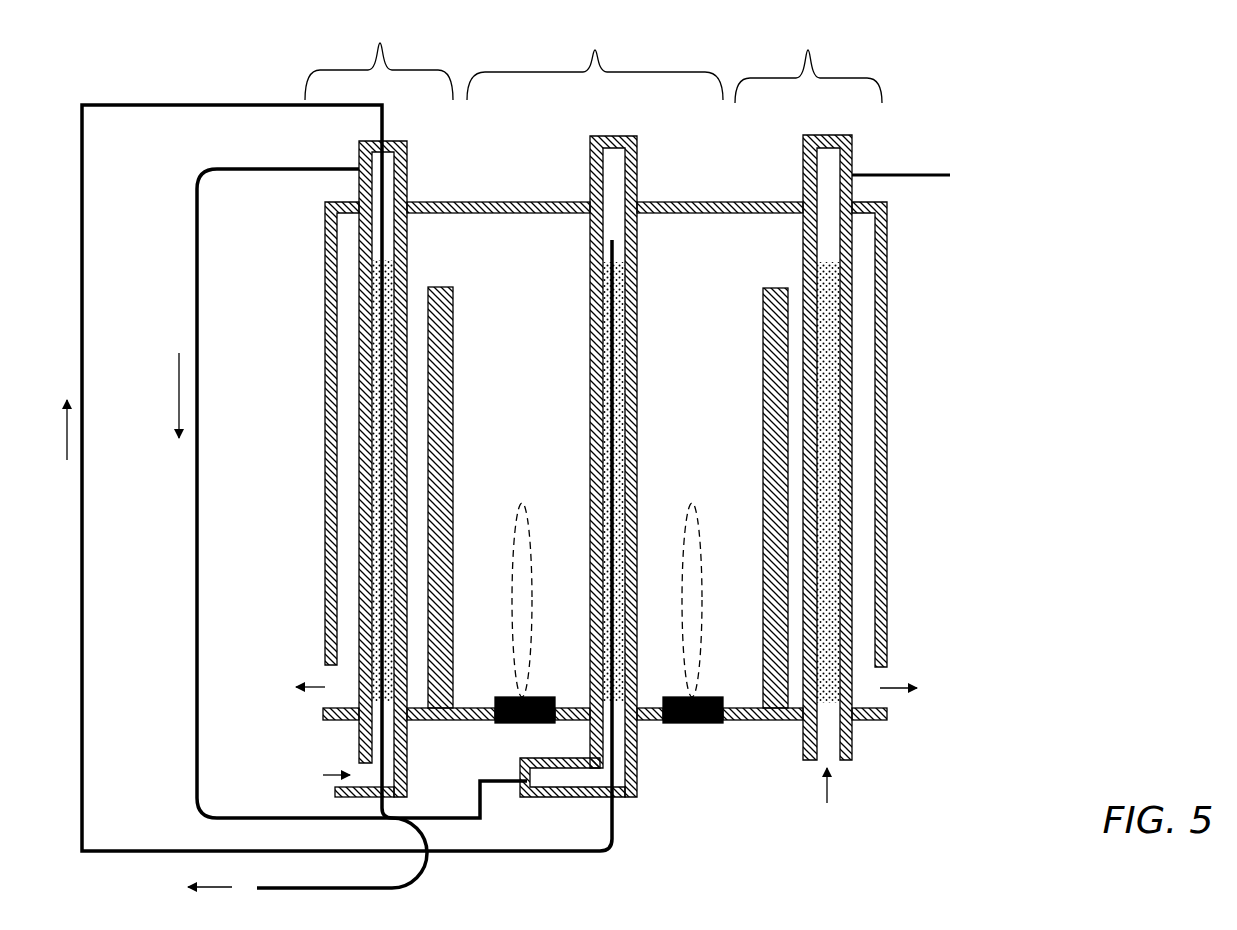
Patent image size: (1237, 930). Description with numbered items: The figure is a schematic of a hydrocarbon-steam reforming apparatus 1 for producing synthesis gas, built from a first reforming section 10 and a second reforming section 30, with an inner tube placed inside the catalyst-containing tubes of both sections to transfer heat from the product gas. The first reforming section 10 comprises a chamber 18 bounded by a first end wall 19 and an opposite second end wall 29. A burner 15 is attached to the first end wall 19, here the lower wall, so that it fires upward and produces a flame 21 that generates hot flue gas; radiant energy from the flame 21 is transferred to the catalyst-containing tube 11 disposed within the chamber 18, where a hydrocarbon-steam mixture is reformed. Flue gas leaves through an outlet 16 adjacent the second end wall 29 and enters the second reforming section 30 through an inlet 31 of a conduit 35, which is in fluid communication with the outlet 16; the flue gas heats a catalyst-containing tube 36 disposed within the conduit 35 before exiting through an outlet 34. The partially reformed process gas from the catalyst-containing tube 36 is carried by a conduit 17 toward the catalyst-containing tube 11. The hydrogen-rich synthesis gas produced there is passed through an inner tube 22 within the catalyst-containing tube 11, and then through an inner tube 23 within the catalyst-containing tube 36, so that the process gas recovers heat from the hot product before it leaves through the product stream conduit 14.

The hydrocarbon-steam reforming apparatus 1 is at (1052, 121).
The first reforming section 10 is at (595, 58).
The second reforming section 30 is at (593, 56).
The catalyst-containing tube 11 is at (590, 380).
The inner tube 22 is at (622, 350).
The second end wall 29 is at (528, 203).
The inlet 31 is at (422, 240).
The outlet 16 is at (450, 270).
The chamber 18 is at (453, 490).
The burner 15 is at (505, 725).
The flame 21 is at (700, 553).
The first end wall 19 is at (740, 721).
The conduit 35 is at (330, 408).
The catalyst-containing tube 36 is at (360, 500).
The inner tube 23 is at (375, 563).
The outlet 34 is at (322, 666).
The conduit 17 is at (195, 522).
The product stream conduit 14 is at (417, 867).